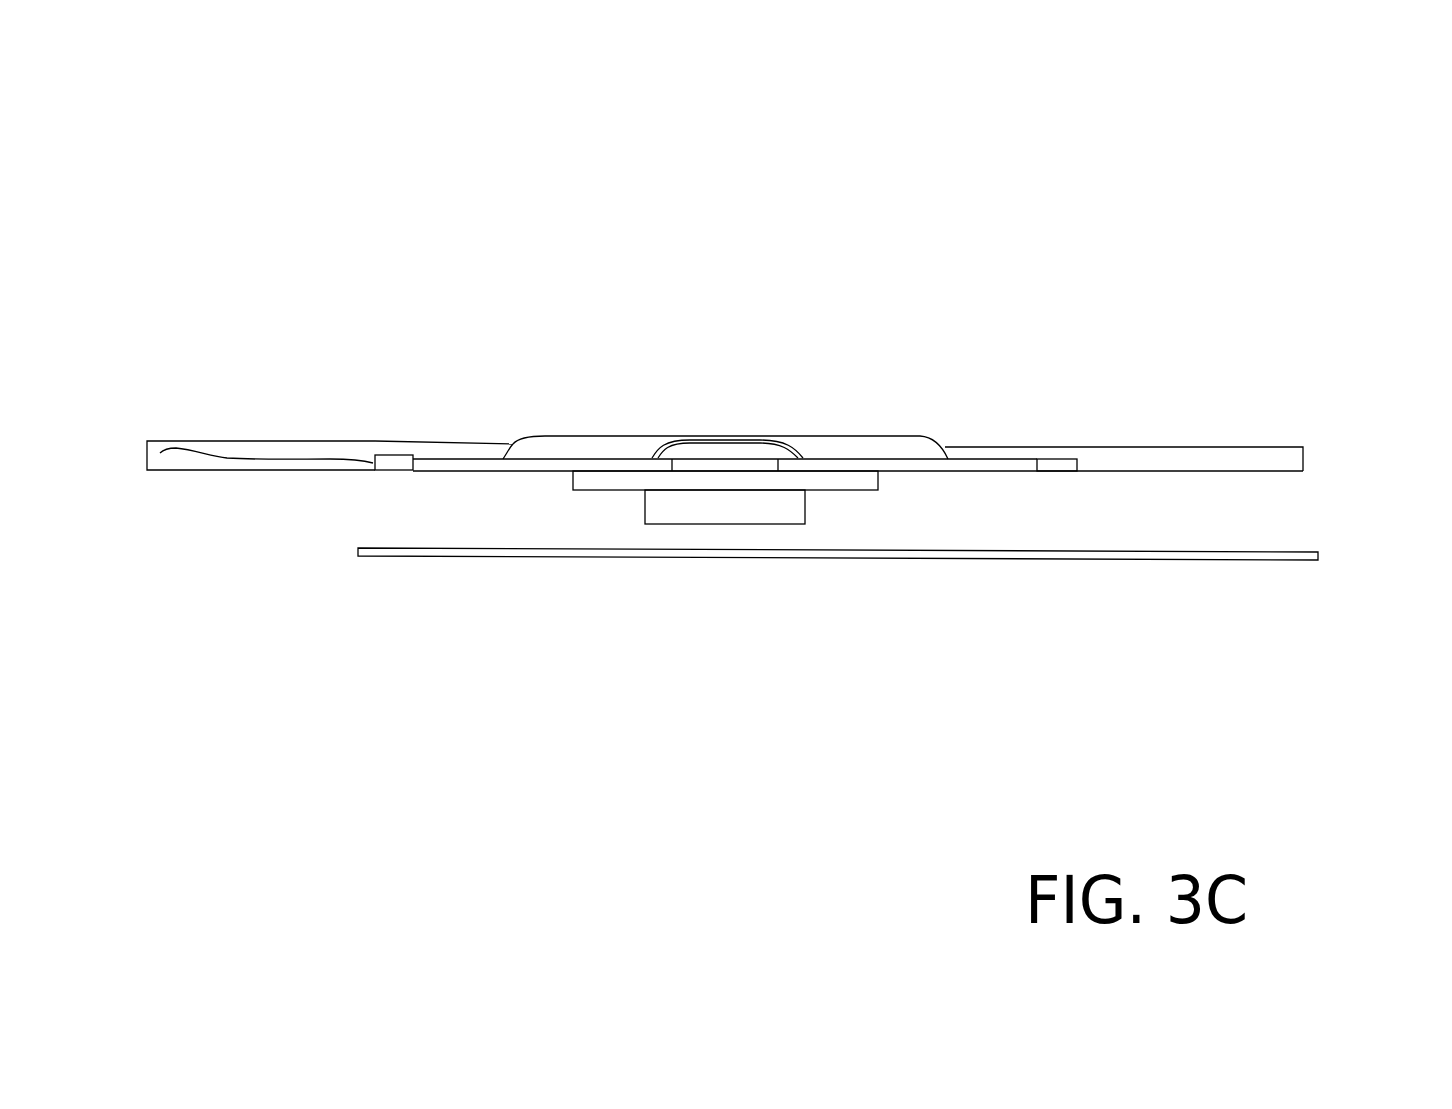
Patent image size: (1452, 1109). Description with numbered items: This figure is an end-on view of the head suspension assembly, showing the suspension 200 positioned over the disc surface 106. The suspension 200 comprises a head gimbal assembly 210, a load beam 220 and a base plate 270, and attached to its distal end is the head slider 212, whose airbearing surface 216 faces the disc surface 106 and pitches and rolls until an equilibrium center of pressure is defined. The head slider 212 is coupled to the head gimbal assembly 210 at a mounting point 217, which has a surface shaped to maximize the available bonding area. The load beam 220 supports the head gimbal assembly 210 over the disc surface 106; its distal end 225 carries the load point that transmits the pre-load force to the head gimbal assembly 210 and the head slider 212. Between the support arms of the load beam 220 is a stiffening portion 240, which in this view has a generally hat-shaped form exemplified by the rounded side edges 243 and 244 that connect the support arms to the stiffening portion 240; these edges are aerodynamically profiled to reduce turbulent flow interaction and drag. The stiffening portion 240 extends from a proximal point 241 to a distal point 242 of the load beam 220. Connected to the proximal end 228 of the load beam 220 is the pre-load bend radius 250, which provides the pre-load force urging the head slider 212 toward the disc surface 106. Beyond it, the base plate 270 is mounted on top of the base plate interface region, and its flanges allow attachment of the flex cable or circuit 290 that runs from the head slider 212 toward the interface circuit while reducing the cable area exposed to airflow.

The suspension 200 is at (1141, 237).
The base plate 270 is at (274, 313).
The flex cable or circuit 290 is at (239, 500).
The pre-load bend radius 250 is at (313, 509).
The proximal end of load beam 228 is at (499, 348).
The proximal point 241 is at (631, 318).
The distal point 242 is at (862, 297).
The side edge of stiffening portion 243 is at (929, 380).
The side edge of stiffening portion 244 is at (690, 378).
The stiffening portion 240 is at (858, 346).
The load beam 220 is at (1124, 386).
The distal end of load beam 225 is at (811, 570).
The mounting point 217 is at (803, 618).
The head gimbal assembly 210 is at (609, 542).
The head slider 212 is at (648, 617).
The airbearing surface 216 is at (717, 543).
The disc surface 106 is at (901, 622).